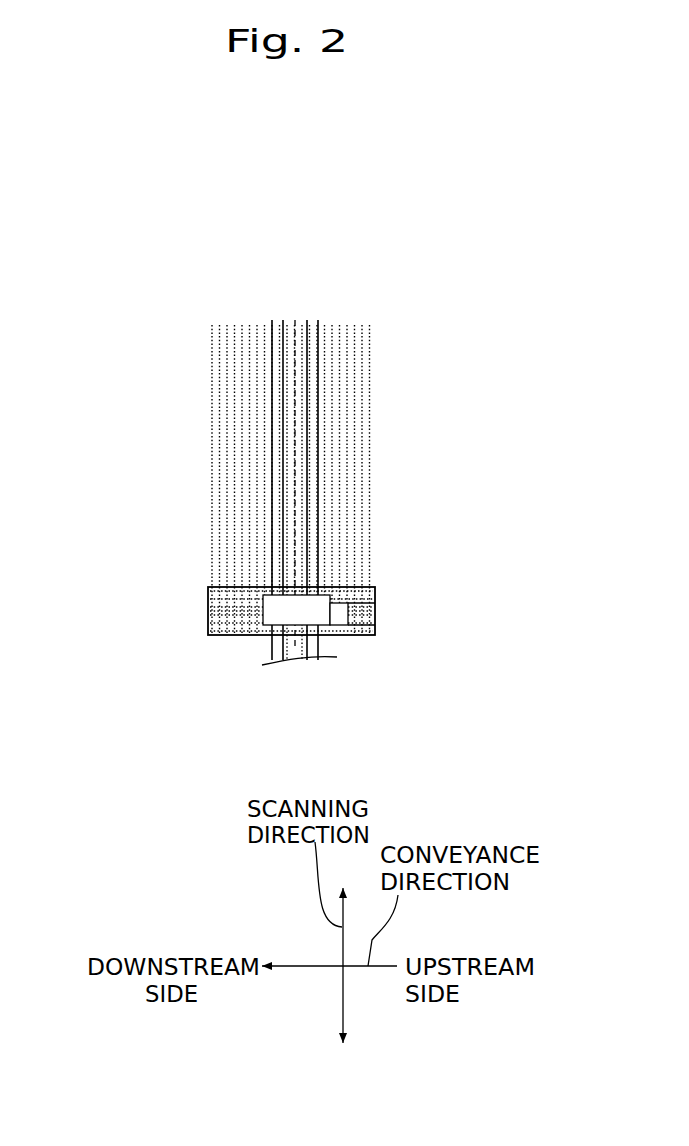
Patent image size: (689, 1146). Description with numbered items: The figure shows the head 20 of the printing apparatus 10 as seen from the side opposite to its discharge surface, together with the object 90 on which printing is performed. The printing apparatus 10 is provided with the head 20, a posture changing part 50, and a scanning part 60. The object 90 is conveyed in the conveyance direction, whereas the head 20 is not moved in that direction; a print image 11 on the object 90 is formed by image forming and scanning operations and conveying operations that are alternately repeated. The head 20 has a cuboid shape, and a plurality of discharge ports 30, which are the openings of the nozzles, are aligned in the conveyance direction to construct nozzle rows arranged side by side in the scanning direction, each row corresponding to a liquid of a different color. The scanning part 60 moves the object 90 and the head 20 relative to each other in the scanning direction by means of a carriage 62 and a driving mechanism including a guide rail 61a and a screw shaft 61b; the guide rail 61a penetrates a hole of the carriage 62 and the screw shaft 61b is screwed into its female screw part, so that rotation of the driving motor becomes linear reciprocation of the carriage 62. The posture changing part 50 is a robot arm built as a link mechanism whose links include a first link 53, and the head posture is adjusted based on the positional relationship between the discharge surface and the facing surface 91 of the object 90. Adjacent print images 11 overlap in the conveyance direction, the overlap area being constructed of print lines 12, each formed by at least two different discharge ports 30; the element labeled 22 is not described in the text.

The printing apparatus 10 is at (205, 225).
The print image 11 is at (388, 447).
The print line 12 is at (240, 450).
The head 20 is at (279, 622).
The recording head 22 is at (225, 634).
The discharge port 30 is at (208, 608).
The posture changing part 50 is at (358, 612).
The first link 53 is at (340, 615).
The scanning part 60 is at (292, 302).
The guide rail 61a is at (312, 328).
The screw shaft 61b is at (278, 340).
The carriage 62 is at (270, 612).
The object 90 is at (158, 500).
The facing surface 91 is at (232, 358).